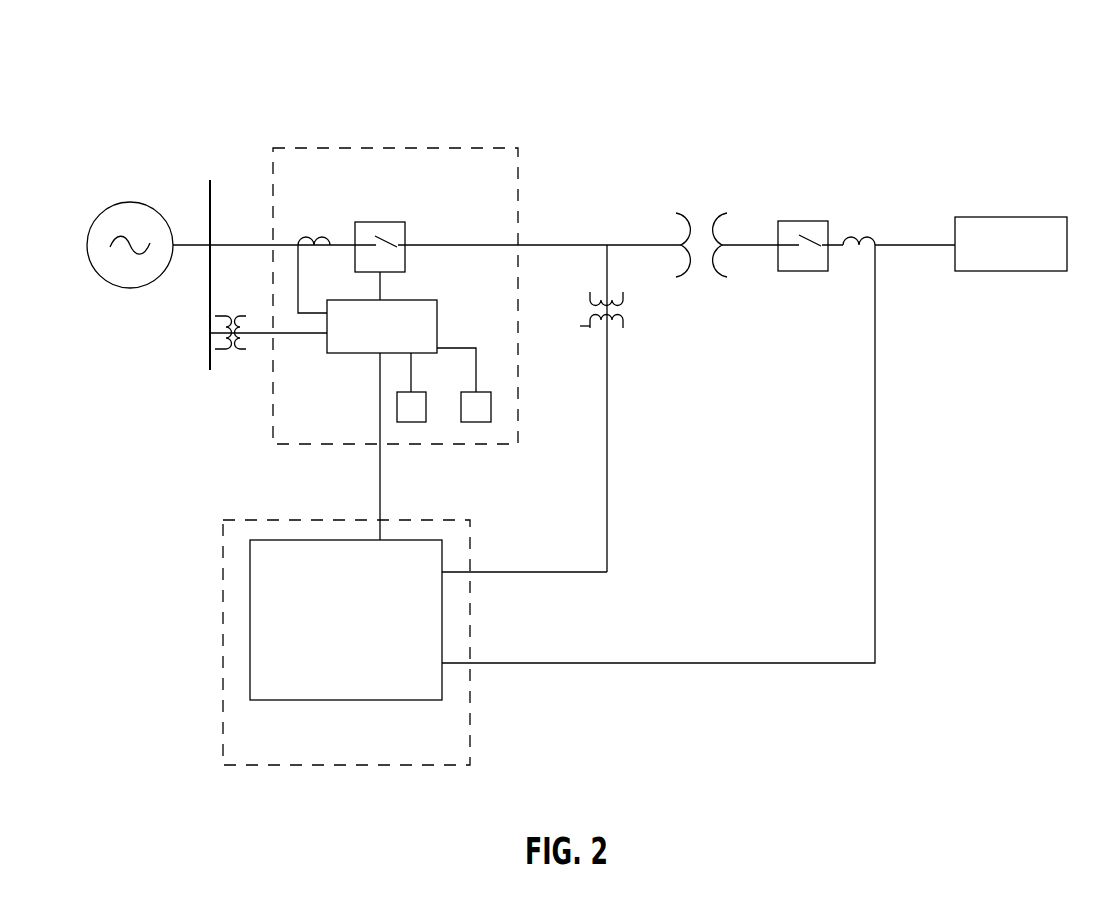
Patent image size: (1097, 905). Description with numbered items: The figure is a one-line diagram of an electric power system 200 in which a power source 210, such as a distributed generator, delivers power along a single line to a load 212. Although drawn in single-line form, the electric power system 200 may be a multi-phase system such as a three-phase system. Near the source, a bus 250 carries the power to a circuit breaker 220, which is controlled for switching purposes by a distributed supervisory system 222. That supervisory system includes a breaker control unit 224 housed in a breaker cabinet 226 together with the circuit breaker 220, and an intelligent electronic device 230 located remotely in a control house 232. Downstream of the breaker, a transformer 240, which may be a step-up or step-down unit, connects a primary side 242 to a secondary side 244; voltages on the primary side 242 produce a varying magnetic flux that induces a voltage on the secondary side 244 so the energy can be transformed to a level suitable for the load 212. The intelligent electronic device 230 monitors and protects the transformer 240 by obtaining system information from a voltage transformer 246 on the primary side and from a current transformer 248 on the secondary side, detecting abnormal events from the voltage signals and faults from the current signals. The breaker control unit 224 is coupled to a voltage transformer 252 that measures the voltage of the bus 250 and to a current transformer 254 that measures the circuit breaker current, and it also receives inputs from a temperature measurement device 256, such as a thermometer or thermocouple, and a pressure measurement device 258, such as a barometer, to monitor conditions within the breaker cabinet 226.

The electric power system 200 is at (819, 73).
The power source 210 is at (132, 289).
The load 212 is at (997, 271).
The circuit breaker 220 is at (381, 221).
The distributed supervisory system 222 is at (342, 379).
The breaker control unit 224 is at (437, 326).
The breaker cabinet 226 is at (407, 148).
The intelligent electronic device 230 is at (292, 700).
The control house 232 is at (223, 698).
The transformer 240 is at (727, 275).
The primary side 242 is at (602, 200).
The secondary side 244 is at (834, 192).
The voltage transformer 246 is at (590, 325).
The current transformer 248 is at (851, 237).
The bus 250 is at (208, 193).
The voltage transformer 252 is at (243, 352).
The current transformer 254 is at (308, 238).
The temperature measurement device 256 is at (411, 422).
The pressure measurement device 258 is at (491, 405).